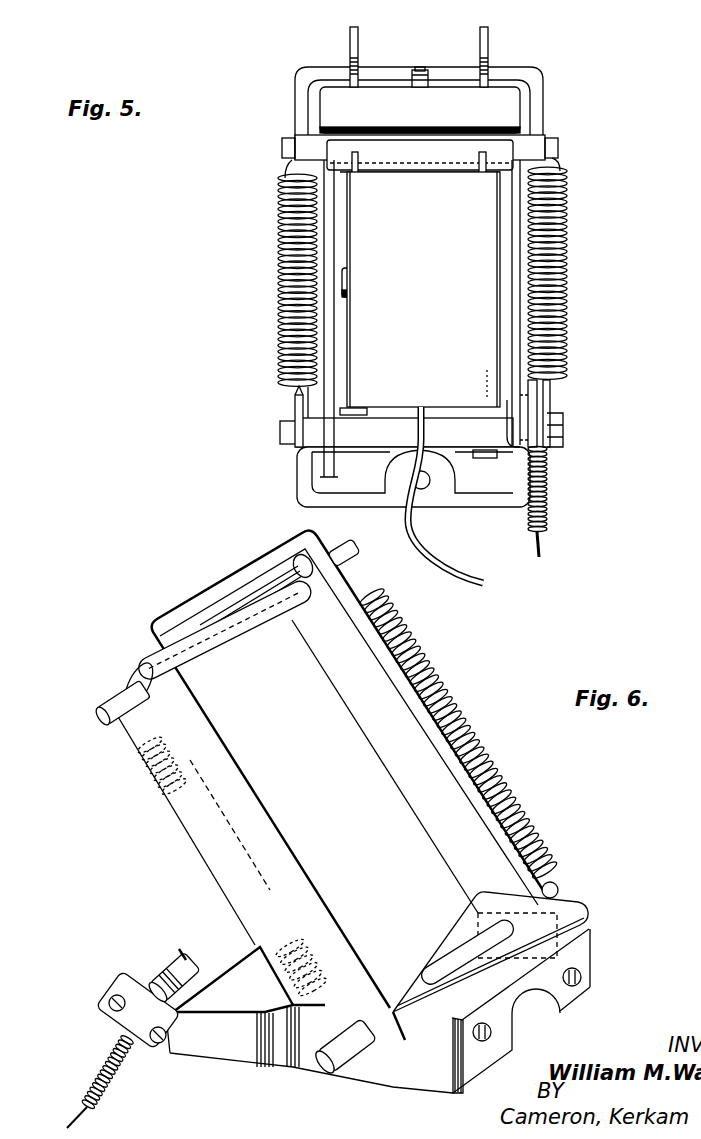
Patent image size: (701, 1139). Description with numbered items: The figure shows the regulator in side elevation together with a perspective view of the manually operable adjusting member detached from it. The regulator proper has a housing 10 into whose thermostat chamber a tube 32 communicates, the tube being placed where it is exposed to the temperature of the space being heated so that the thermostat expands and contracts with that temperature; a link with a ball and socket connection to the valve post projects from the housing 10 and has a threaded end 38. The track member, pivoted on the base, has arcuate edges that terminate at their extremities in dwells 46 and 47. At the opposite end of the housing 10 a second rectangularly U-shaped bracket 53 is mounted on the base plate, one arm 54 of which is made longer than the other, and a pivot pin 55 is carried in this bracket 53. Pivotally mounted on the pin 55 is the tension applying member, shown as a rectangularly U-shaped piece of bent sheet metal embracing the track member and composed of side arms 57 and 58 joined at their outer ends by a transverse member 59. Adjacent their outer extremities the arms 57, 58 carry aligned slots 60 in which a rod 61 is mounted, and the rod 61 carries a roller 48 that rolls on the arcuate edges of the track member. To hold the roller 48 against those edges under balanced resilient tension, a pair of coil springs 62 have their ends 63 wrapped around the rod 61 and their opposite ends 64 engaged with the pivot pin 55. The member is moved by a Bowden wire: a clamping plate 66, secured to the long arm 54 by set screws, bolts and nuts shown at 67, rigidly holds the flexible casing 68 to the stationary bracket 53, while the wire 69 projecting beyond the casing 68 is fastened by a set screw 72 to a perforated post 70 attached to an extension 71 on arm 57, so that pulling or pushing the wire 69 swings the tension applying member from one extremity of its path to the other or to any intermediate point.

In FIG. 5, the housing 10 is at (490, 353).
In FIG. 5, the tube 32 is at (445, 574).
In FIG. 5, the threaded end of link 38 is at (420, 68).
In FIG. 5, the dwell 46 is at (483, 202).
In FIG. 5, the dwell 47 is at (352, 60).
In FIG. 5, the roller 48 is at (413, 148).
In FIG. 6, the roller 48 is at (218, 652).
In FIG. 5, the second rectangularly U-shaped bracket 53 is at (370, 428).
In FIG. 6, the second rectangularly U-shaped bracket 53 is at (437, 1076).
In FIG. 6, the long arm of bracket 54 is at (236, 1058).
In FIG. 6, the pivot pin 55 is at (440, 977).
In FIG. 5, the side arm 57 is at (325, 327).
In FIG. 6, the side arm 57 is at (283, 856).
In FIG. 5, the side arm 58 is at (520, 262).
In FIG. 6, the side arm 58 is at (447, 770).
In FIG. 5, the transverse member 59 is at (510, 103).
In FIG. 6, the transverse member 59 is at (205, 592).
In FIG. 6, the aligned slots 60 is at (308, 557).
In FIG. 5, the rod 61 is at (283, 150).
In FIG. 6, the rod 61 is at (100, 728).
In FIG. 5, the coil springs 62 is at (280, 282).
In FIG. 6, the coil springs 62 is at (440, 692).
In FIG. 5, the spring end 63 is at (290, 172).
In FIG. 6, the spring end 63 is at (355, 585).
In FIG. 5, the spring end 64 is at (295, 405).
In FIG. 6, the spring end 64 is at (552, 882).
In FIG. 5, the clamping plate 66 is at (548, 430).
In FIG. 6, the clamping plate 66 is at (108, 1008).
In FIG. 6, the set screws 67 is at (158, 1045).
In FIG. 5, the flexible casing 68 is at (548, 502).
In FIG. 6, the flexible casing 68 is at (90, 1104).
In FIG. 5, the wire 69 is at (541, 550).
In FIG. 6, the wire 69 is at (187, 957).
In FIG. 6, the perforated post 70 is at (242, 1002).
In FIG. 6, the extension 71 is at (258, 952).
In FIG. 6, the set screw 72 is at (155, 968).